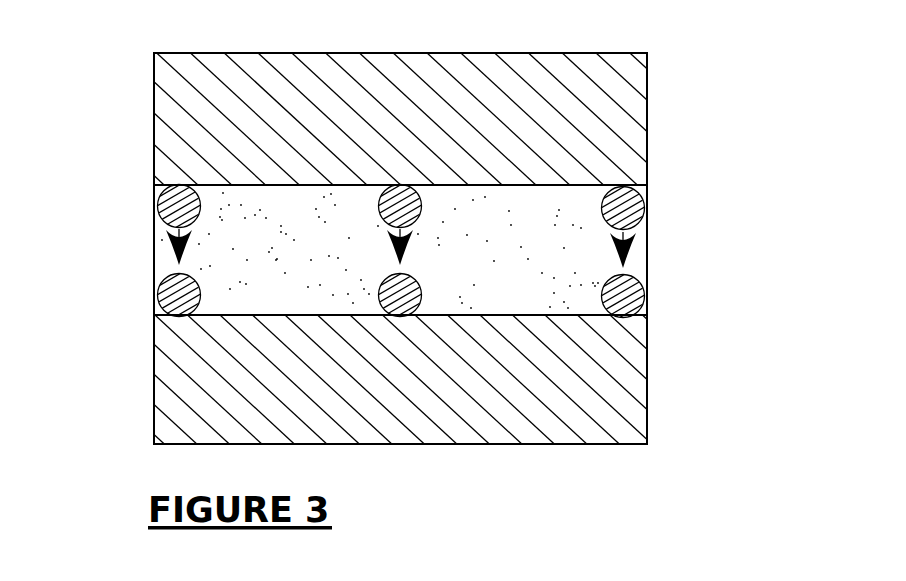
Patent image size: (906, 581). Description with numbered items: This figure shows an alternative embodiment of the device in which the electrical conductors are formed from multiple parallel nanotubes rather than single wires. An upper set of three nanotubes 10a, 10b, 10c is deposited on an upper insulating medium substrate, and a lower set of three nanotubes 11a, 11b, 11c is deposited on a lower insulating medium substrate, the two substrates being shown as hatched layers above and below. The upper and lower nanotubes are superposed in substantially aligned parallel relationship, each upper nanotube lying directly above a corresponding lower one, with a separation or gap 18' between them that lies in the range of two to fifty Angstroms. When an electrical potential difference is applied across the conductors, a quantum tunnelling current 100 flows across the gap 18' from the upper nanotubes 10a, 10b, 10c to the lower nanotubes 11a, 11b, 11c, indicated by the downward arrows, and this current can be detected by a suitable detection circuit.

The separation or gap 18' is at (457, 250).
The nanotube 10a is at (637, 207).
The nanotube 10b is at (400, 238).
The nanotube 10c is at (167, 203).
The nanotube 11a is at (630, 302).
The nanotube 11b is at (398, 274).
The nanotube 11c is at (167, 295).
The quantum tunnelling current 100 is at (167, 245).